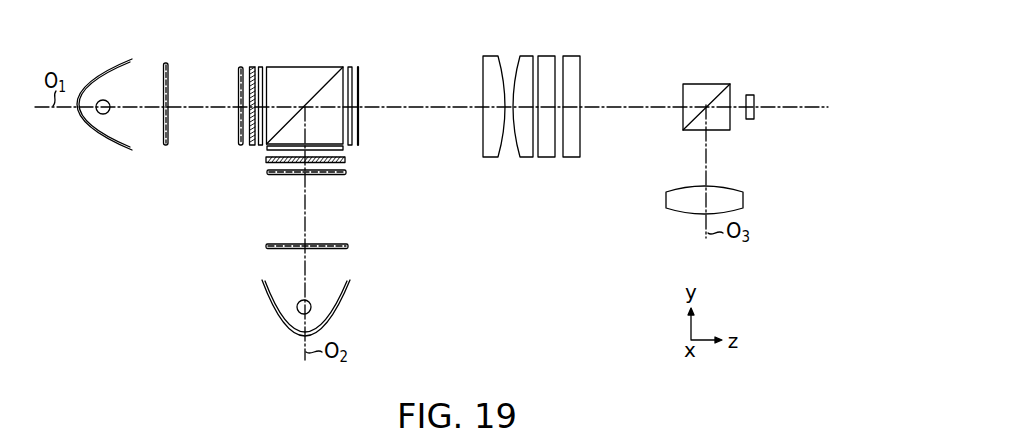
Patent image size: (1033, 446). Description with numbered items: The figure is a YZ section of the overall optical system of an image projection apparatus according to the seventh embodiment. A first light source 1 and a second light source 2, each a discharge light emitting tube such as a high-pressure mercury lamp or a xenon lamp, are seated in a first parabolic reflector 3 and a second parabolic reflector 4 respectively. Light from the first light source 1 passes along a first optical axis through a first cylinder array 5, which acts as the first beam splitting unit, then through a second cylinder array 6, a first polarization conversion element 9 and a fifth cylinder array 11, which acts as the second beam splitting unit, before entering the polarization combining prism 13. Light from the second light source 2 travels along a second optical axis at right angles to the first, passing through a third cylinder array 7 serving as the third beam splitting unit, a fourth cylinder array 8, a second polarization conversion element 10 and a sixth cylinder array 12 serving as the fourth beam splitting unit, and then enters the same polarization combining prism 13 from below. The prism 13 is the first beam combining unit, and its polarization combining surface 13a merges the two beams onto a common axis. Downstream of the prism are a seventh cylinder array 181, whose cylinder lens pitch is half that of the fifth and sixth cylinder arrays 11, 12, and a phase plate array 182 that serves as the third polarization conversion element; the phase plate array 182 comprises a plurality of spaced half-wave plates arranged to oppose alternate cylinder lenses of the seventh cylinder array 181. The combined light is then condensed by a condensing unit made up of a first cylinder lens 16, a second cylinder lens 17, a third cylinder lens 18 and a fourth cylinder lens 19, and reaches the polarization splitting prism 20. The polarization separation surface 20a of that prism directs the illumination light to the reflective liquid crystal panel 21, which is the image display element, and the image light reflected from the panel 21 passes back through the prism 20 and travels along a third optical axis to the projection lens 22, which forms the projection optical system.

The first light source 1 is at (102, 114).
The second light source 2 is at (297, 307).
The first parabolic reflector 3 is at (124, 148).
The second parabolic reflector 4 is at (341, 308).
The first cylinder array 5 is at (166, 63).
The second cylinder array 6 is at (240, 66).
The third cylinder array 7 is at (348, 246).
The fourth cylinder array 8 is at (348, 173).
The first polarization conversion element 9 is at (252, 66).
The second polarization conversion element 10 is at (346, 161).
The fifth cylinder array 11 is at (261, 66).
The sixth cylinder array 12 is at (345, 148).
The polarization combining prism 13 is at (285, 66).
The polarization combining surface 13a is at (334, 77).
The first cylinder lens 16 is at (487, 158).
The second cylinder lens 17 is at (518, 158).
The third cylinder lens 18 is at (545, 158).
The fourth cylinder lens 19 is at (572, 158).
The polarization splitting prism 20 is at (692, 83).
The polarization separation surface 20a is at (727, 88).
The reflective liquid crystal panel 21 is at (749, 120).
The projection lens 22 is at (744, 200).
The seventh cylinder array 181 is at (350, 66).
The phase plate array 182 is at (359, 67).